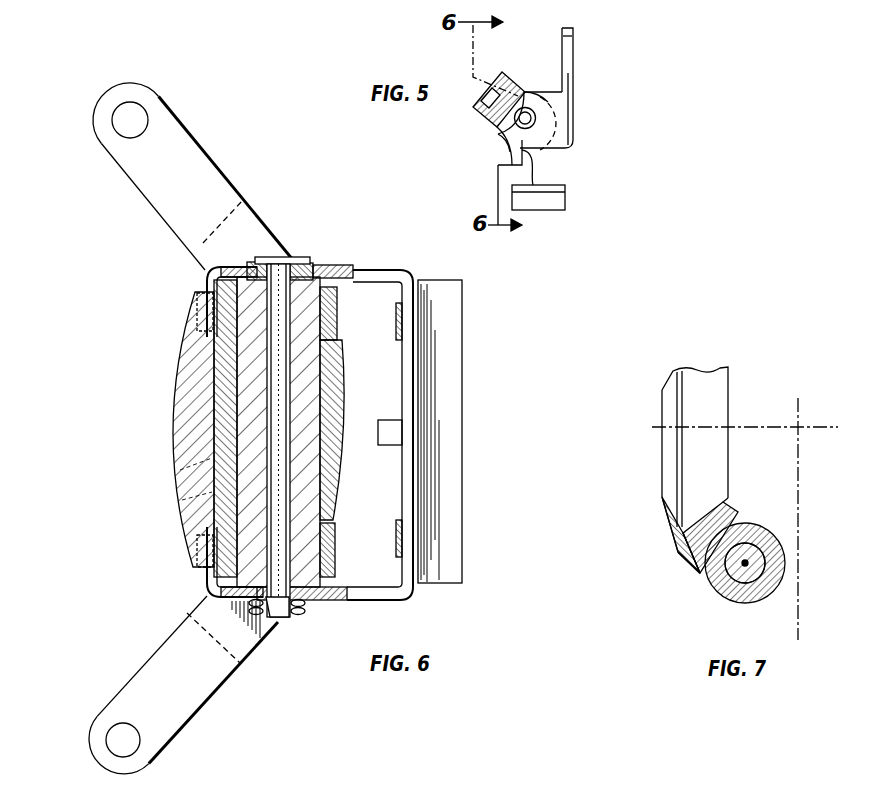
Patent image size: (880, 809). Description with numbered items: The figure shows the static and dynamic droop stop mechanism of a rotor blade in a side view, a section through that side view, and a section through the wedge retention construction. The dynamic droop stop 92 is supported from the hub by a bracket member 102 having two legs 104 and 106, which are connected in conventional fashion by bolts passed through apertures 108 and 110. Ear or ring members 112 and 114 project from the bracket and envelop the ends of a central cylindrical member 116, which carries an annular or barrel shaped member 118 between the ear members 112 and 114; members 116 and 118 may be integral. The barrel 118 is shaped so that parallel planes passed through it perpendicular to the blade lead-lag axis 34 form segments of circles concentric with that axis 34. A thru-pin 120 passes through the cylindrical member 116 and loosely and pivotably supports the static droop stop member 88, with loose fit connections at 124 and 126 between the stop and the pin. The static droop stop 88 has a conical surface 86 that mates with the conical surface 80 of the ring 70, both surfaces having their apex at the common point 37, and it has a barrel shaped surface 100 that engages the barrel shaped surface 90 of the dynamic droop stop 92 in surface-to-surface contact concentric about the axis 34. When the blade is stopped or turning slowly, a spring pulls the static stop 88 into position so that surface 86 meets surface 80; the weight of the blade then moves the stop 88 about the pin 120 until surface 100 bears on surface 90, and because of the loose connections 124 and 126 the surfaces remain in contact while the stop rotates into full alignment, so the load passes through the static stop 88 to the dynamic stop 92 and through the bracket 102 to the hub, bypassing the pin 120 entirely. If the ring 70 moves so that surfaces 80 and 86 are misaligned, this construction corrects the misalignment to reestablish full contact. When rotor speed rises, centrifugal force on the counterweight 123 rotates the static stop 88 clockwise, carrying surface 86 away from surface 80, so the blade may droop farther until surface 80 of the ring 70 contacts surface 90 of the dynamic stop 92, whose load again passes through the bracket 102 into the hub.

In FIG. 7, the blade lead-lag axis 34 is at (800, 503).
In FIG. 7, the common point 37 is at (803, 426).
In FIG. 7, the ring 70 is at (720, 391).
In FIG. 7, the surface 80 is at (690, 563).
In FIG. 6, the surface 86 is at (184, 366).
In FIG. 5, the surface 86 is at (483, 96).
In FIG. 7, the surface 86 is at (720, 507).
In FIG. 6, the static droop stop member 88 is at (402, 598).
In FIG. 5, the static droop stop member 88 is at (508, 133).
In FIG. 7, the static droop stop member 88 is at (680, 553).
In FIG. 6, the surface 90 is at (215, 400).
In FIG. 5, the surface 90 is at (492, 130).
In FIG. 7, the surface 90 is at (692, 566).
In FIG. 6, the dynamic droop stop 92 is at (337, 377).
In FIG. 5, the dynamic droop stop 92 is at (537, 153).
In FIG. 7, the dynamic droop stop 92 is at (752, 607).
In FIG. 6, the surface 100 is at (222, 458).
In FIG. 7, the surface 100 is at (748, 543).
In FIG. 6, the bracket member 102 is at (163, 218).
In FIG. 5, the bracket member 102 is at (577, 118).
In FIG. 6, the leg 104 is at (143, 667).
In FIG. 6, the leg 106 is at (208, 153).
In FIG. 5, the leg 106 is at (574, 60).
In FIG. 6, the aperture 108 is at (138, 743).
In FIG. 6, the aperture 110 is at (127, 103).
In FIG. 5, the aperture 110 is at (573, 35).
In FIG. 6, the ear member 112 is at (209, 585).
In FIG. 6, the ear member 114 is at (208, 280).
In FIG. 5, the ear member 114 is at (533, 90).
In FIG. 6, the central cylindrical member 116 is at (328, 265).
In FIG. 6, the barrel shaped member 118 is at (193, 490).
In FIG. 6, the thru-pin 120 is at (284, 618).
In FIG. 5, the thru-pin 120 is at (527, 97).
In FIG. 6, the counterweight 123 is at (452, 346).
In FIG. 5, the counterweight 123 is at (578, 205).
In FIG. 6, the loose fit connection 124 is at (273, 627).
In FIG. 6, the loose fit connection 126 is at (290, 260).